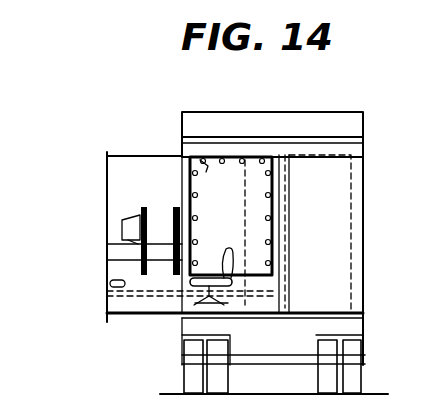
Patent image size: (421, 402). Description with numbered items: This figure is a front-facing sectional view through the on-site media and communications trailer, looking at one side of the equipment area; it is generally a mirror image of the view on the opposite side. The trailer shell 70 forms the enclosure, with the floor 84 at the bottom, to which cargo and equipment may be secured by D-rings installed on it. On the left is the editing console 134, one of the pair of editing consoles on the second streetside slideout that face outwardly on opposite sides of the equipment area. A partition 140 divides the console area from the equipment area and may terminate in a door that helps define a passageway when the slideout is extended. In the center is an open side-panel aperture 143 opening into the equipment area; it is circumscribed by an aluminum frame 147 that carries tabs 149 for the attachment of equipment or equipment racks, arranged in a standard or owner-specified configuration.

The trailer shell 70 is at (313, 112).
The floor 84 is at (338, 308).
The editing console 134 is at (158, 192).
The partition 140 is at (93, 200).
The open side-panel aperture 143 is at (241, 233).
The aluminum frame 147 is at (223, 157).
The tabs 149 is at (221, 180).